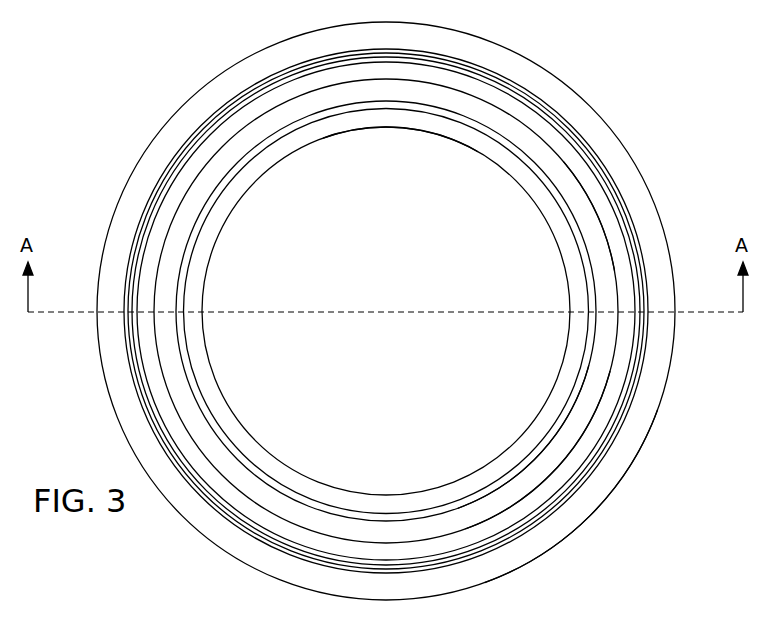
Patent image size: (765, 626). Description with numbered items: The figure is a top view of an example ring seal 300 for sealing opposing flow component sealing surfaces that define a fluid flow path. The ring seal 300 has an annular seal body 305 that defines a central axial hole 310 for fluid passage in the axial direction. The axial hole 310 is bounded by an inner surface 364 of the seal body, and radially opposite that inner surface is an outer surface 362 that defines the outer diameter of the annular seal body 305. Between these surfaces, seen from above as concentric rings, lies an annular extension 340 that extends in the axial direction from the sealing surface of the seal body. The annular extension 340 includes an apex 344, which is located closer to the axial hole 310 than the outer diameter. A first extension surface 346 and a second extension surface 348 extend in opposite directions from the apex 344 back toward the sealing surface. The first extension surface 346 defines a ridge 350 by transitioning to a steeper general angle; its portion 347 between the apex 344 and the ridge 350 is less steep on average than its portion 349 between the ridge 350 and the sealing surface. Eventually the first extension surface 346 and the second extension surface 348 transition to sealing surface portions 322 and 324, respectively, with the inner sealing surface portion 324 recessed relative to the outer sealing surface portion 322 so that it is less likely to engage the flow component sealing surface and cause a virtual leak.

The ring seal 300 is at (103, 62).
The annular seal body 305 is at (143, 155).
The axial hole 310 is at (308, 160).
The sealing surface portion 322 is at (590, 145).
The sealing surface portion 324 is at (588, 292).
The annular extension 340 is at (544, 458).
The apex 344 is at (585, 192).
The first extension surface 346 is at (556, 154).
The portion of the first extension surface 347 is at (540, 132).
The second extension surface 348 is at (592, 233).
The portion of the first extension surface 349 is at (560, 118).
The ridge 350 is at (533, 97).
The outer surface 362 is at (595, 512).
The inner surface 364 is at (245, 422).